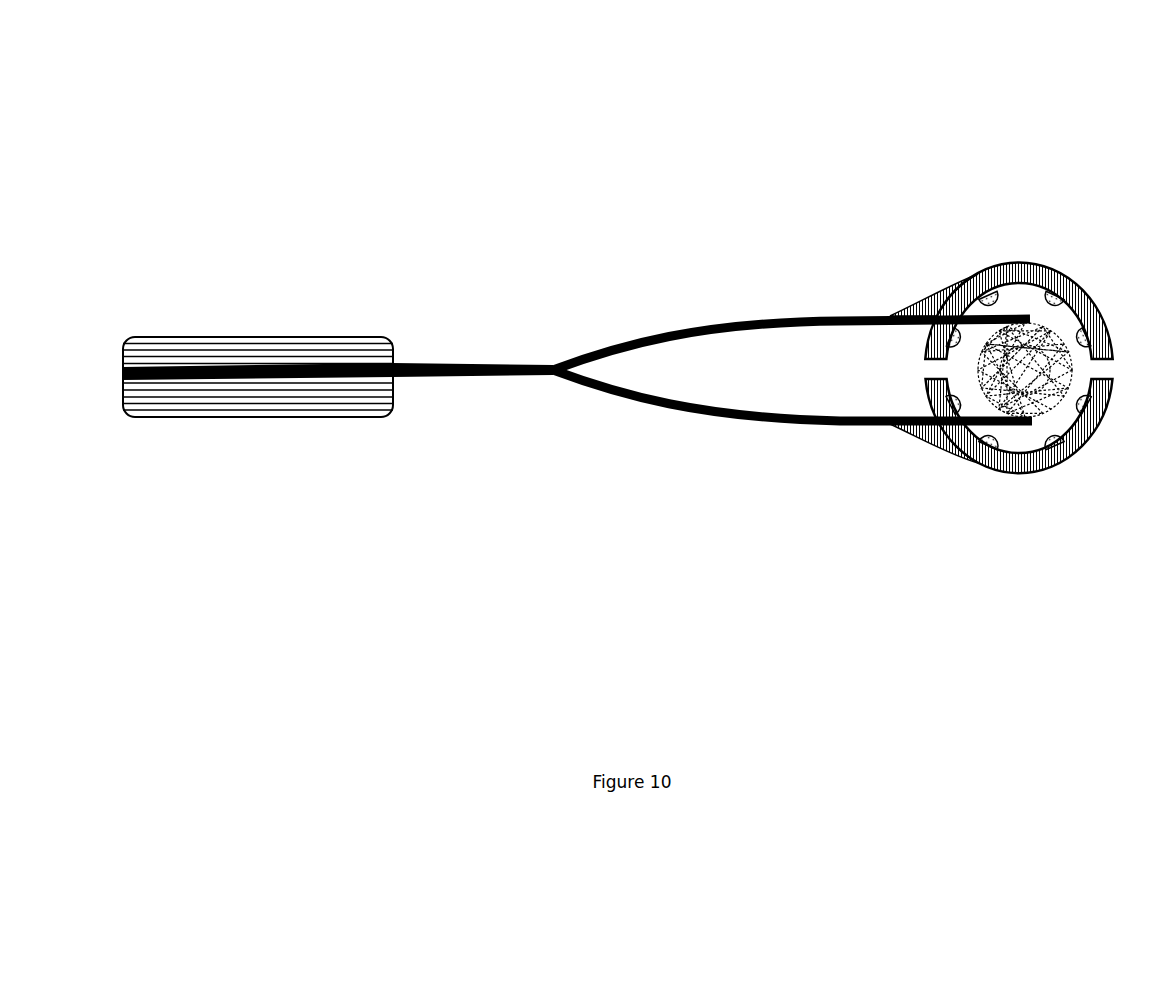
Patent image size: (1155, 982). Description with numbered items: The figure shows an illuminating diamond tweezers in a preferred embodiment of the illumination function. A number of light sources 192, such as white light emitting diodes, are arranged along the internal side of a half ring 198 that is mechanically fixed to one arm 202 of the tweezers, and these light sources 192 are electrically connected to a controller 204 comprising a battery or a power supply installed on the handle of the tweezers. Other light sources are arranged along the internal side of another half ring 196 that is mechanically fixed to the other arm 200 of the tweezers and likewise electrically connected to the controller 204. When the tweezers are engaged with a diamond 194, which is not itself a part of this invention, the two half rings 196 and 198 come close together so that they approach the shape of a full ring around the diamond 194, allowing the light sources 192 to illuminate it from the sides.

The light sources 192 is at (1052, 448).
The diamond 194 is at (1043, 340).
The half ring 196 is at (972, 276).
The half ring 198 is at (975, 463).
The arm 200 is at (632, 342).
The arm 202 is at (730, 415).
The controller 204 is at (247, 338).